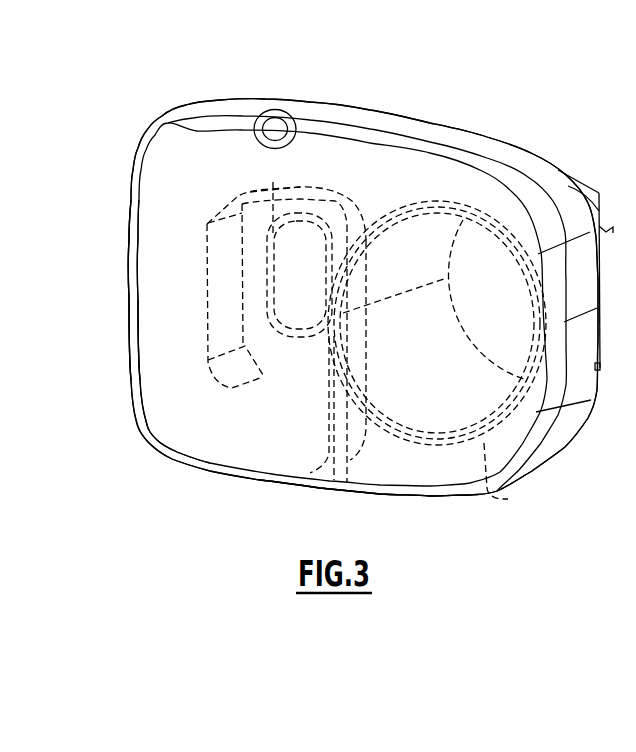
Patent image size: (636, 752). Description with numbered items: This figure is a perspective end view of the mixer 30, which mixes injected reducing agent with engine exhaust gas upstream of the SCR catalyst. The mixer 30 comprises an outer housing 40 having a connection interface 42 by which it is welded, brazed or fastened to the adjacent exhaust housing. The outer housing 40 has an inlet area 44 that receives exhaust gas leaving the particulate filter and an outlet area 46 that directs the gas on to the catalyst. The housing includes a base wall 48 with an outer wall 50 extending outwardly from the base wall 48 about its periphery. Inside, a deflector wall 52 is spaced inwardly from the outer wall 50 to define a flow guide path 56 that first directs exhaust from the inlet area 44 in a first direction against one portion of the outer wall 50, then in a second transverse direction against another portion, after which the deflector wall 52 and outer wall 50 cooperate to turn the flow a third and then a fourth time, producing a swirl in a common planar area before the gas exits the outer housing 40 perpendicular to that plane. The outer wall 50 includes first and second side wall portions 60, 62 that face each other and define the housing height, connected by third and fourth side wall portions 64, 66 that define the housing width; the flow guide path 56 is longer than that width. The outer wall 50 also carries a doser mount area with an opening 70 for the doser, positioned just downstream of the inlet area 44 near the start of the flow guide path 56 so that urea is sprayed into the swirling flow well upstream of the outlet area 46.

The mixer 30 is at (144, 93).
The outer housing 40 is at (167, 460).
The connection interface 42 is at (533, 152).
The inlet area 44 is at (437, 358).
The outlet area 46 is at (273, 185).
The base wall 48 is at (295, 447).
The outer wall 50 is at (152, 408).
The deflector wall 52 is at (201, 258).
The flow guide path 56 is at (219, 156).
The first side wall portion 60 is at (443, 142).
The second side wall portion 62 is at (422, 496).
The third side wall portion 64 is at (553, 414).
The fourth side wall portion 66 is at (130, 337).
The opening 70 is at (291, 110).